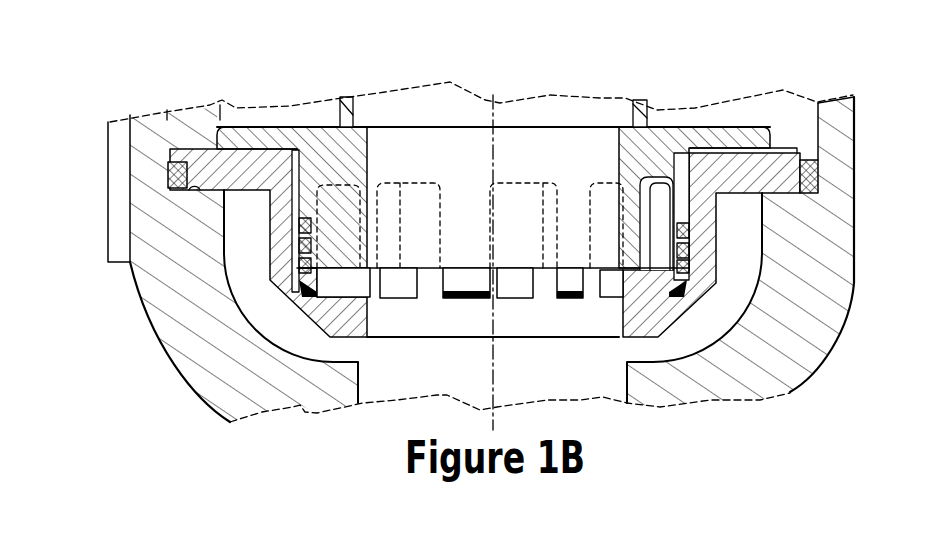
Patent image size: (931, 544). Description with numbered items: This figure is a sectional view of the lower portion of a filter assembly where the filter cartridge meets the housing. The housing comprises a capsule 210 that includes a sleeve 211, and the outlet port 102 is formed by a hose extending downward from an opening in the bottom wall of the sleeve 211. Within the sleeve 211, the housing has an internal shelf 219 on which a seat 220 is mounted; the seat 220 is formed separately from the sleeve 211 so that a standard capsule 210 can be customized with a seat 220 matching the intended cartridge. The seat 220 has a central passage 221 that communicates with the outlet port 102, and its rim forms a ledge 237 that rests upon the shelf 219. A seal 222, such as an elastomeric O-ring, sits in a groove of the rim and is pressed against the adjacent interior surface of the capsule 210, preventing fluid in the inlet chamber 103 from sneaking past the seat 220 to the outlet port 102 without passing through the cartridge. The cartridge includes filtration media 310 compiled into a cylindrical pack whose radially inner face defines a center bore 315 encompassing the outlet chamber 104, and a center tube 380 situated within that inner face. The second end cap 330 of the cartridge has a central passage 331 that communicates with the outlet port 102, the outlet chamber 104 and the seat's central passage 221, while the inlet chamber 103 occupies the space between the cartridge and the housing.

The outlet port 102 is at (567, 380).
The inlet chamber 103 is at (200, 125).
The outlet chamber 104 is at (452, 117).
The capsule 210 is at (862, 144).
The sleeve 211 is at (853, 115).
The internal shelf 219 is at (186, 192).
The seat 220 is at (218, 178).
The central passage 221 is at (467, 307).
The seal 222 is at (168, 180).
The ledge 237 is at (744, 194).
The filtration media 310 is at (320, 126).
The center bore 315 is at (464, 170).
The second end cap 330 is at (250, 114).
The central passage 331 is at (544, 150).
The center tube 380 is at (640, 102).